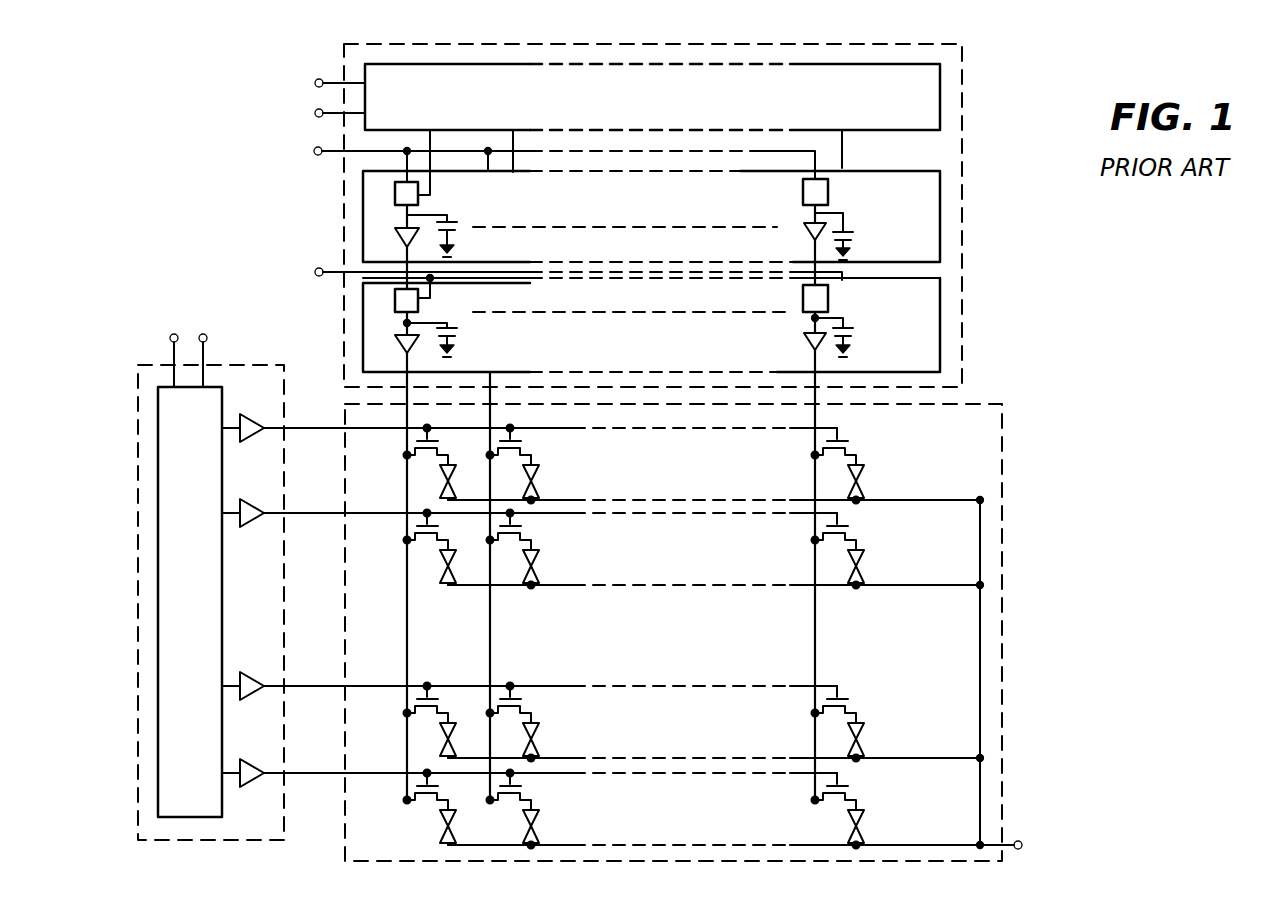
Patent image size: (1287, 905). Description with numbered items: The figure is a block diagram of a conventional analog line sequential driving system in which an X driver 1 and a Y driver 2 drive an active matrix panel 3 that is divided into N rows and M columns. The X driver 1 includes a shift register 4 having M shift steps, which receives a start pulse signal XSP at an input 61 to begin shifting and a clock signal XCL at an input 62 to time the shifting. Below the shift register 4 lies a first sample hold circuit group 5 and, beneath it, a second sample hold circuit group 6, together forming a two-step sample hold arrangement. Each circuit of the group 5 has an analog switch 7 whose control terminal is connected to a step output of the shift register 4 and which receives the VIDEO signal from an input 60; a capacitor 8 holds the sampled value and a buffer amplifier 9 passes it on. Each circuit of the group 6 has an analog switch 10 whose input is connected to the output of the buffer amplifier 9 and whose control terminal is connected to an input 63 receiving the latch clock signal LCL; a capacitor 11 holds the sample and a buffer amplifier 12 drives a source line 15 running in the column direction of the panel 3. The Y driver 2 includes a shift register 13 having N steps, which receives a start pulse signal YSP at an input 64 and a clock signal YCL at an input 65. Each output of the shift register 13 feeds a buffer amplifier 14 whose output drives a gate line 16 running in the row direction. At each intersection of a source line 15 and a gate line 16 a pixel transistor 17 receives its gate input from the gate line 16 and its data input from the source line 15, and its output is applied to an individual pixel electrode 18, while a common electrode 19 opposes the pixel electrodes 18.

The X driver 1 is at (962, 56).
The Y driver 2 is at (138, 442).
The active matrix panel 3 is at (990, 432).
The shift register 4 is at (684, 111).
The sample hold circuit group 5 is at (668, 211).
The second sample hold circuit group 6 is at (668, 353).
The analog switch 7 is at (395, 197).
The capacitor 8 is at (455, 222).
The buffer amplifier 9 is at (400, 233).
The analog switch 10 is at (395, 306).
The capacitor 11 is at (457, 331).
The buffer amplifier 12 is at (400, 343).
The shift register 13 is at (205, 571).
The buffer amplifier 14 is at (262, 418).
The source line 15 is at (815, 415).
The gate line 16 is at (387, 437).
The pixel transistor 17 is at (438, 441).
The pixel electrode 18 is at (456, 468).
The common electrode 19 is at (1020, 839).
The input 60 is at (318, 156).
The input 61 is at (320, 78).
The input 62 is at (318, 117).
The input 63 is at (319, 276).
The input 64 is at (170, 340).
The input 65 is at (208, 339).